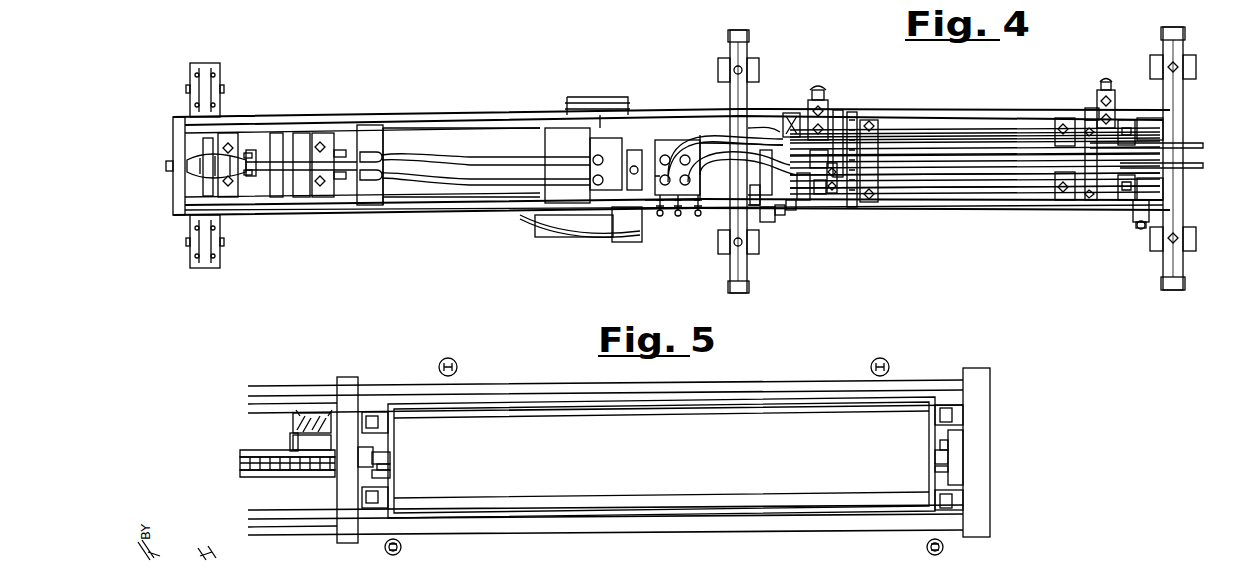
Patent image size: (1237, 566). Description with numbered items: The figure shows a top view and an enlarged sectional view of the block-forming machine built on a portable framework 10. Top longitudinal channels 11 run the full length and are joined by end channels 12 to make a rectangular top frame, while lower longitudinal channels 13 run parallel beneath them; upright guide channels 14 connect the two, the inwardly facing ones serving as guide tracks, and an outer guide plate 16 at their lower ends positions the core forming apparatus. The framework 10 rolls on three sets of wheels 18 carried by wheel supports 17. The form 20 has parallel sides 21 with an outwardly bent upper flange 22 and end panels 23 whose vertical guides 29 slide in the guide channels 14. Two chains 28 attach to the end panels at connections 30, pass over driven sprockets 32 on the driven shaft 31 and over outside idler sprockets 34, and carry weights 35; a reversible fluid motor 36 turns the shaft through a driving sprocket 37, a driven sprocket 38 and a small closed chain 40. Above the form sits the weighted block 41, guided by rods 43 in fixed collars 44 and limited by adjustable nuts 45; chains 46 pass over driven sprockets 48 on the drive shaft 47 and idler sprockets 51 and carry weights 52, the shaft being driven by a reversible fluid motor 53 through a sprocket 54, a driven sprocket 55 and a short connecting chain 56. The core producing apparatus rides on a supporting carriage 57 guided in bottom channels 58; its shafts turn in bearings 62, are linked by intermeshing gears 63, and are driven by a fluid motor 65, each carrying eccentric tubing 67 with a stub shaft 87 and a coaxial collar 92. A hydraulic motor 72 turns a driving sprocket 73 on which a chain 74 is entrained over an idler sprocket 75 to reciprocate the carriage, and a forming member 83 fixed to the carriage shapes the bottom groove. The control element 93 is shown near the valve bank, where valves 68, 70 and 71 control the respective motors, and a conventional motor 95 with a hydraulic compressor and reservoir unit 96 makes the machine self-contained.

In FIG. 4, the framework 10 is at (980, 217).
In FIG. 5, the framework 10 is at (1000, 420).
In FIG. 4, the top longitudinal channels 11 is at (1003, 208).
In FIG. 4, the end channels 12 is at (1170, 130).
In FIG. 4, the lower longitudinal channels 13 is at (488, 214).
In FIG. 5, the lower longitudinal channels 13 is at (493, 532).
In FIG. 4, the upright guide channels 14 is at (1190, 190).
In FIG. 5, the upright guide channels 14 is at (965, 498).
In FIG. 5, the outer guide plate 16 is at (958, 455).
In FIG. 4, the wheel supports 17 is at (1196, 236).
In FIG. 5, the wheel supports 17 is at (990, 511).
In FIG. 4, the wheels 18 is at (1185, 284).
In FIG. 5, the form 20 is at (725, 422).
In FIG. 5, the sides 21 is at (578, 502).
In FIG. 4, the upper flange 22 is at (985, 130).
In FIG. 5, the upper flange 22 is at (798, 500).
In FIG. 4, the end panels 23 is at (1203, 140).
In FIG. 5, the end panels 23 is at (935, 458).
In FIG. 4, the chains 28 is at (1130, 206).
In FIG. 5, the chains 28 is at (927, 547).
In FIG. 4, the vertical guides 29 is at (1163, 190).
In FIG. 5, the vertical guides 29 is at (945, 510).
In FIG. 5, the chain connections 30 is at (936, 470).
In FIG. 4, the driven shaft 31 is at (1046, 205).
In FIG. 4, the driven sprockets 32 is at (755, 210).
In FIG. 4, the outside idler sprockets 34 is at (1138, 228).
In FIG. 4, the weights 35 is at (1140, 228).
In FIG. 5, the weights 35 is at (936, 555).
In FIG. 4, the reversible fluid motor 36 is at (768, 222).
In FIG. 4, the driving sprocket 37 is at (832, 195).
In FIG. 4, the driven sprocket 38 is at (828, 185).
In FIG. 4, the small closed chain 40 is at (830, 200).
In FIG. 4, the weighted block 41 is at (960, 132).
In FIG. 4, the guide rods 43 is at (1080, 150).
In FIG. 4, the fixed collars 44 is at (1060, 150).
In FIG. 4, the adjustable nuts 45 is at (1050, 150).
In FIG. 4, the chains 46 is at (1106, 90).
In FIG. 5, the chains 46 is at (888, 362).
In FIG. 4, the drive shaft 47 is at (1008, 150).
In FIG. 4, the driven sprockets 48 is at (1090, 108).
In FIG. 4, the idler sprockets 51 is at (1112, 88).
In FIG. 4, the weights 52 is at (1104, 80).
In FIG. 5, the weights 52 is at (870, 367).
In FIG. 4, the reversible fluid motor 53 is at (790, 108).
In FIG. 4, the sprocket 54 is at (860, 118).
In FIG. 4, the driven sprocket 55 is at (845, 118).
In FIG. 4, the short connecting chain 56 is at (878, 200).
In FIG. 4, the supporting carriage 57 is at (318, 130).
In FIG. 4, the bottom channels 58 is at (432, 208).
In FIG. 5, the bottom channels 58 is at (246, 514).
In FIG. 4, the bearings 62 is at (345, 143).
In FIG. 4, the intermeshing gears 63 is at (256, 152).
In FIG. 4, the fluid motor 65 is at (190, 172).
In FIG. 4, the tubing 67 is at (460, 164).
In FIG. 5, the tubing 67 is at (268, 470).
In FIG. 4, the valve 68 is at (680, 216).
In FIG. 4, the valve 70 is at (700, 216).
In FIG. 4, the valve 71 is at (612, 236).
In FIG. 4, the hydraulic motor 72 is at (646, 158).
In FIG. 5, the hydraulic motor 72 is at (310, 413).
In FIG. 5, the driving sprocket 73 is at (304, 472).
In FIG. 4, the chain 74 is at (390, 160).
In FIG. 5, the chain 74 is at (270, 446).
In FIG. 4, the idler sprocket 75 is at (167, 168).
In FIG. 4, the forming member 83 is at (447, 150).
In FIG. 5, the forming member 83 is at (252, 452).
In FIG. 5, the stub shaft 87 is at (358, 450).
In FIG. 4, the coaxial collars 92 is at (342, 178).
In FIG. 4, the fitting 93 is at (662, 216).
In FIG. 4, the motor 95 is at (560, 110).
In FIG. 4, the hydraulic compressor and reservoir unit 96 is at (556, 238).